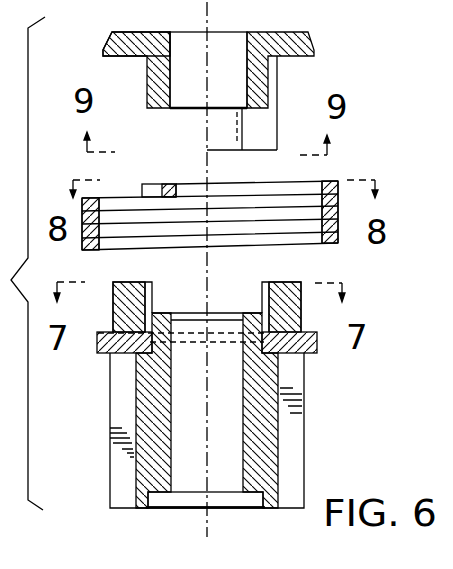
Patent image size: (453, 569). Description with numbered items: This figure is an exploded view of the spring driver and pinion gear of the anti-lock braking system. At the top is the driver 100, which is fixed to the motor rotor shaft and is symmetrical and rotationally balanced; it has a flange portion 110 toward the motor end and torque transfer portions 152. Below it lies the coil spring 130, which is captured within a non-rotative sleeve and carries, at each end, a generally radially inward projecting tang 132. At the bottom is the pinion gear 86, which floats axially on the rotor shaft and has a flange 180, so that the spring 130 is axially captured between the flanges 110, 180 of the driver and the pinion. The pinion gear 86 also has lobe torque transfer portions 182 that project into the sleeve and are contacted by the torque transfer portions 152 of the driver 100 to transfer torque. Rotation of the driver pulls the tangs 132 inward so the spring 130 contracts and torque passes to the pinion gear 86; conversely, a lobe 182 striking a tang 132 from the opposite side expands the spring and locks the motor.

The driver member 100 is at (306, 33).
The flange portion 110 is at (110, 40).
The torque transfer portions 152 is at (223, 126).
The spring 130 is at (330, 184).
The tang 132 is at (166, 186).
The flange 180 is at (307, 358).
The lobe torque transfer portions 182 is at (112, 313).
The pinion gear 86 is at (114, 449).